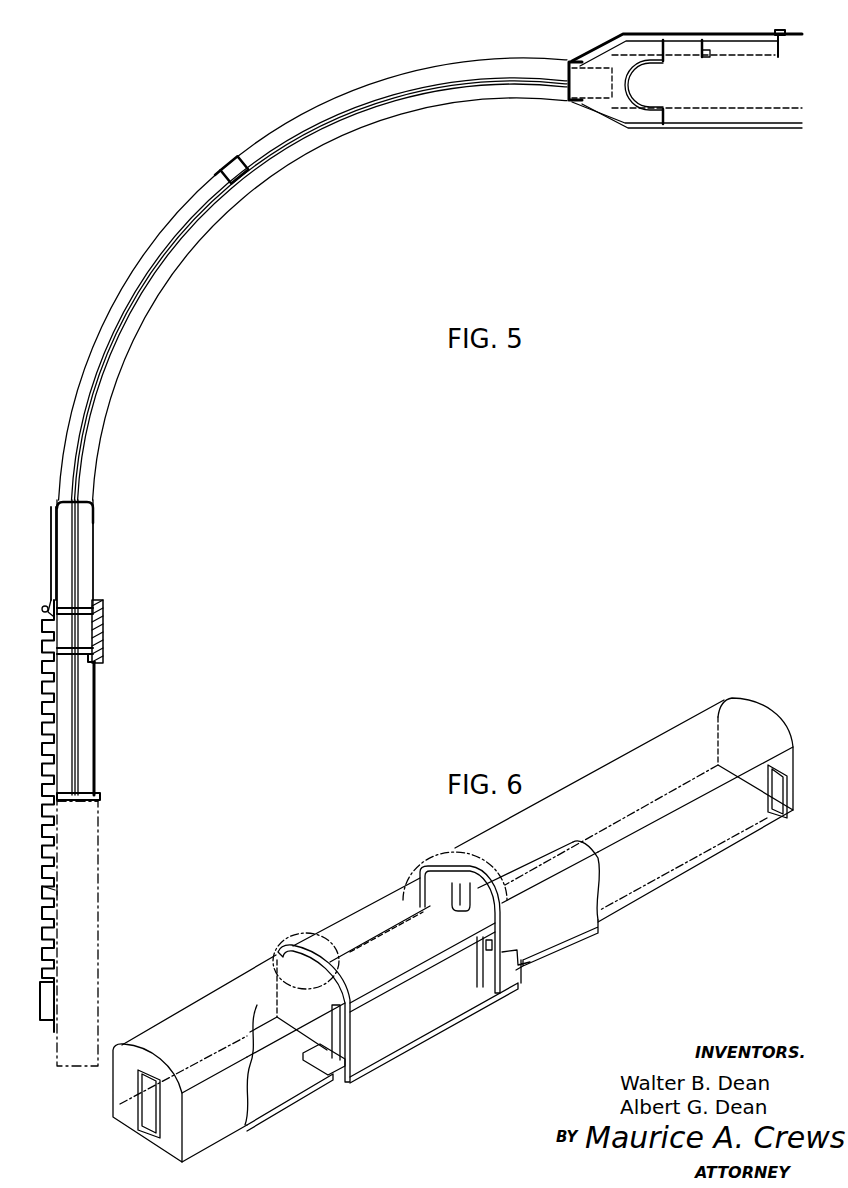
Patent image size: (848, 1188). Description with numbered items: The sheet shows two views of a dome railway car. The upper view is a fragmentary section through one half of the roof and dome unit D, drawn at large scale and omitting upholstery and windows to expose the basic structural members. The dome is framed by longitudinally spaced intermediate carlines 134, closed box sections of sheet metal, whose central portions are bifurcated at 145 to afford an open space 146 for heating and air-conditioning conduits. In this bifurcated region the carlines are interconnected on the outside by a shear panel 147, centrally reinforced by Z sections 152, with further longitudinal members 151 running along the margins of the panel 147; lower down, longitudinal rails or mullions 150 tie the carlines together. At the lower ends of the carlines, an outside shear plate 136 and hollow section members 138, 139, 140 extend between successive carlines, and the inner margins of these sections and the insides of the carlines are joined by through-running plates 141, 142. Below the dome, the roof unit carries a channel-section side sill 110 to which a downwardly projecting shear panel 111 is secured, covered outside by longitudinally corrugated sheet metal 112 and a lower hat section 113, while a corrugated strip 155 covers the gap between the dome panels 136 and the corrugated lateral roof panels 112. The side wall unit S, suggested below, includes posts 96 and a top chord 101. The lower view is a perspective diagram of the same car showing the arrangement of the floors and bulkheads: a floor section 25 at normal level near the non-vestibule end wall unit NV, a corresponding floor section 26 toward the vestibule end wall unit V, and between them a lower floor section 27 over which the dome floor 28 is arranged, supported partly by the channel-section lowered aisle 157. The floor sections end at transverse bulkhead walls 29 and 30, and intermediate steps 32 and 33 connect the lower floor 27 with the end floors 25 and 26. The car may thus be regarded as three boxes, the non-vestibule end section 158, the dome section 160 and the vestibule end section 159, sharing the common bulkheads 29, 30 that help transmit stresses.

In FIG. 5, the intermediate carlines 134 is at (479, 57).
In FIG. 5, the longitudinal rails or mullions 150 is at (221, 165).
In FIG. 5, the longitudinal members 151 is at (565, 89).
In FIG. 5, the shear panel 147 is at (643, 27).
In FIG. 5, the open space 146 is at (680, 68).
In FIG. 5, the Z sections 152 is at (710, 53).
In FIG. 5, the bifurcation 145 is at (677, 121).
In FIG. 5, the shear panel or plate 136 is at (54, 548).
In FIG. 5, the hollow section member 138 is at (97, 520).
In FIG. 5, the hollow section member 139 is at (62, 571).
In FIG. 5, the through-running plate 141 is at (100, 612).
In FIG. 5, the inner plate 142 is at (105, 634).
In FIG. 5, the hollow section member 140 is at (96, 660).
In FIG. 5, the corrugated strip 155 is at (45, 686).
In FIG. 5, the lower hat section 113 is at (31, 1010).
In FIG. 5, the channel-section side sill 110 is at (101, 797).
In FIG. 5, the posts 96 is at (88, 948).
In FIG. 5, the top chord 101 is at (100, 818).
In FIG. 5, the shear panel 111 is at (57, 890).
In FIG. 5, the corrugated sheet metal 112 is at (54, 888).
In FIG. 6, the non-vestibule end section 158 is at (216, 1125).
In FIG. 6, the floor section 25 is at (275, 1088).
In FIG. 6, the transverse bulkhead wall 29 is at (290, 1010).
In FIG. 6, the lower floor section 27 is at (392, 1042).
In FIG. 6, the channel-section lowered aisle 157 is at (356, 933).
In FIG. 6, the intermediate steps 32 is at (340, 1070).
In FIG. 6, the dome floor 28 is at (434, 960).
In FIG. 6, the transverse bulkhead wall 30 is at (502, 906).
In FIG. 6, the intermediate steps 33 is at (515, 972).
In FIG. 6, the dome section 160 is at (428, 1003).
In FIG. 6, the floor section 26 is at (566, 925).
In FIG. 6, the vestibule end section 159 is at (694, 850).
In FIG. 5, the dome unit D is at (282, 123).
In FIG. 6, the dome unit D is at (410, 880).
In FIG. 6, the vestibule end wall unit V is at (772, 713).
In FIG. 6, the non-vestibule end wall unit NV is at (113, 1105).
In FIG. 5, the side wall unit S is at (98, 922).